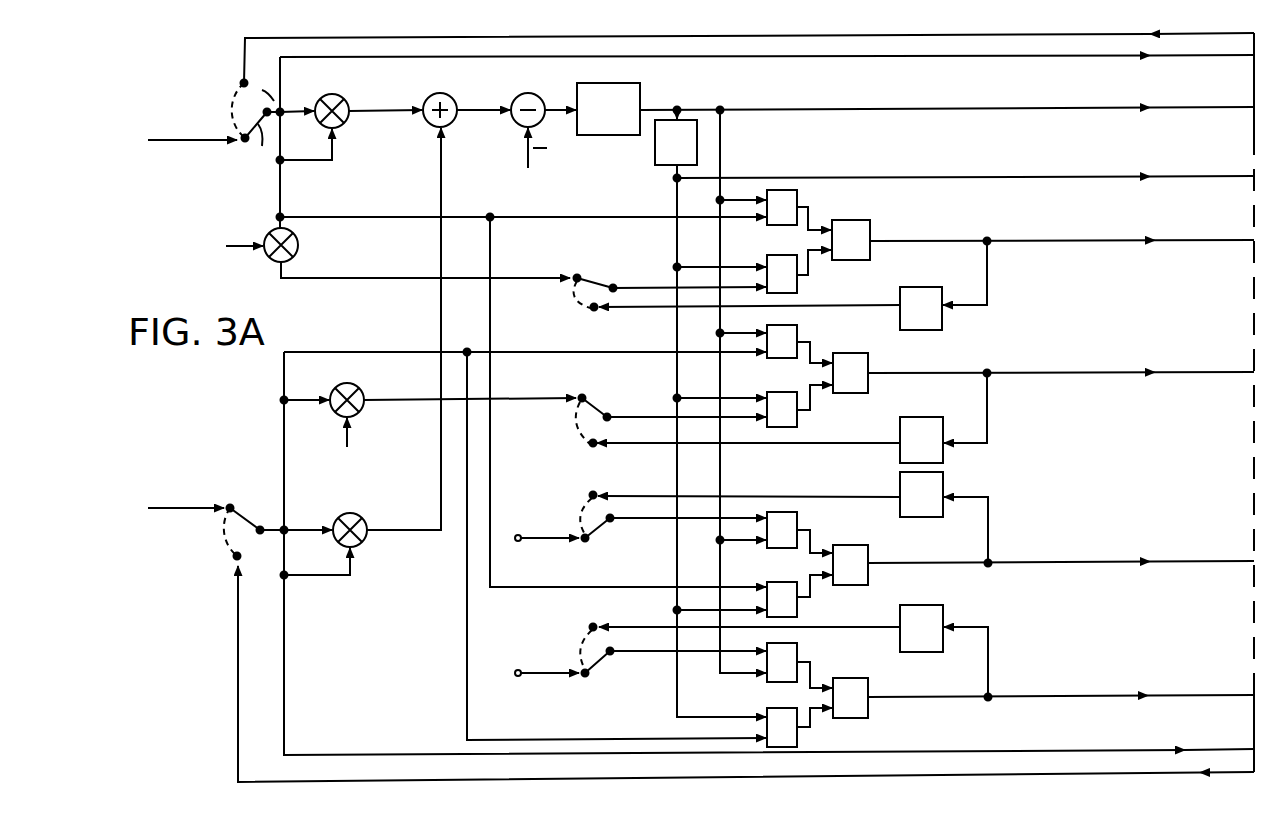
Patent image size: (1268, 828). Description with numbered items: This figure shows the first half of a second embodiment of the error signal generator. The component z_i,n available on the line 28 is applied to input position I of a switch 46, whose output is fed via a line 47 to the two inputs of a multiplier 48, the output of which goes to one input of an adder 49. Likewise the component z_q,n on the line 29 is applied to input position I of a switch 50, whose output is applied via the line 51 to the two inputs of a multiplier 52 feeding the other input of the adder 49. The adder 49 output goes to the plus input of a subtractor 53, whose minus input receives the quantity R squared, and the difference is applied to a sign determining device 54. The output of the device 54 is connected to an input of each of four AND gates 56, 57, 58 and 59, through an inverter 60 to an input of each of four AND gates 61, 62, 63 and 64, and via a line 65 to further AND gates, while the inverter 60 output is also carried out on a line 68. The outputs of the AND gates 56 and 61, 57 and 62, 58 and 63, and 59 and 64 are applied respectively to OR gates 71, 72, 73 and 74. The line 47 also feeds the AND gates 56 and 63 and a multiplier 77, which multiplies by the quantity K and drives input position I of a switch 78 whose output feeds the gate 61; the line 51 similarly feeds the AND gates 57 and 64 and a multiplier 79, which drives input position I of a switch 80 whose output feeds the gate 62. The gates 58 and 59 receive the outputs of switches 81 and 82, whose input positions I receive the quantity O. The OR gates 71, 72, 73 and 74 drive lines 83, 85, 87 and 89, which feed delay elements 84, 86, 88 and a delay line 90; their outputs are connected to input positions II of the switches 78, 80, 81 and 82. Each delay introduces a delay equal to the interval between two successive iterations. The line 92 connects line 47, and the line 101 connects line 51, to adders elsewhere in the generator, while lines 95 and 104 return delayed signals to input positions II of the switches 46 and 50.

The line 28 is at (196, 140).
The line 29 is at (198, 508).
The switch 46 is at (250, 143).
The line 47 is at (247, 113).
The multiplier 48 is at (345, 124).
The adder 49 is at (452, 125).
The switch 50 is at (252, 520).
The line 51 is at (268, 537).
The multiplier 52 is at (366, 519).
The subtractor 53 is at (541, 97).
The sign determining device 54 is at (641, 90).
The AND gate 56 is at (797, 195).
The AND gate 57 is at (797, 328).
The AND gate 58 is at (797, 517).
The AND gate 59 is at (797, 650).
The inverter 60 is at (655, 151).
The AND gate 61 is at (798, 290).
The AND gate 62 is at (797, 420).
The AND gate 63 is at (768, 583).
The AND gate 64 is at (768, 709).
The line 65 is at (1065, 106).
The line 68 is at (1048, 178).
The OR gate 71 is at (855, 222).
The OR gate 72 is at (855, 355).
The OR gate 73 is at (870, 548).
The OR gate 74 is at (860, 678).
The multiplier 77 is at (299, 247).
The switch 78 is at (600, 272).
The multiplier 79 is at (364, 390).
The switch 80 is at (600, 408).
The switch 81 is at (604, 527).
The switch 82 is at (604, 660).
The line 83 is at (1085, 241).
The delay element 84 is at (915, 287).
The line 85 is at (1072, 373).
The delay element 86 is at (912, 417).
The line 87 is at (1065, 565).
The delay element 88 is at (945, 483).
The line 89 is at (1115, 694).
The delay line 90 is at (945, 612).
The line 92 is at (955, 58).
The line 95 is at (455, 40).
The line 101 is at (1088, 746).
The line 104 is at (1005, 773).